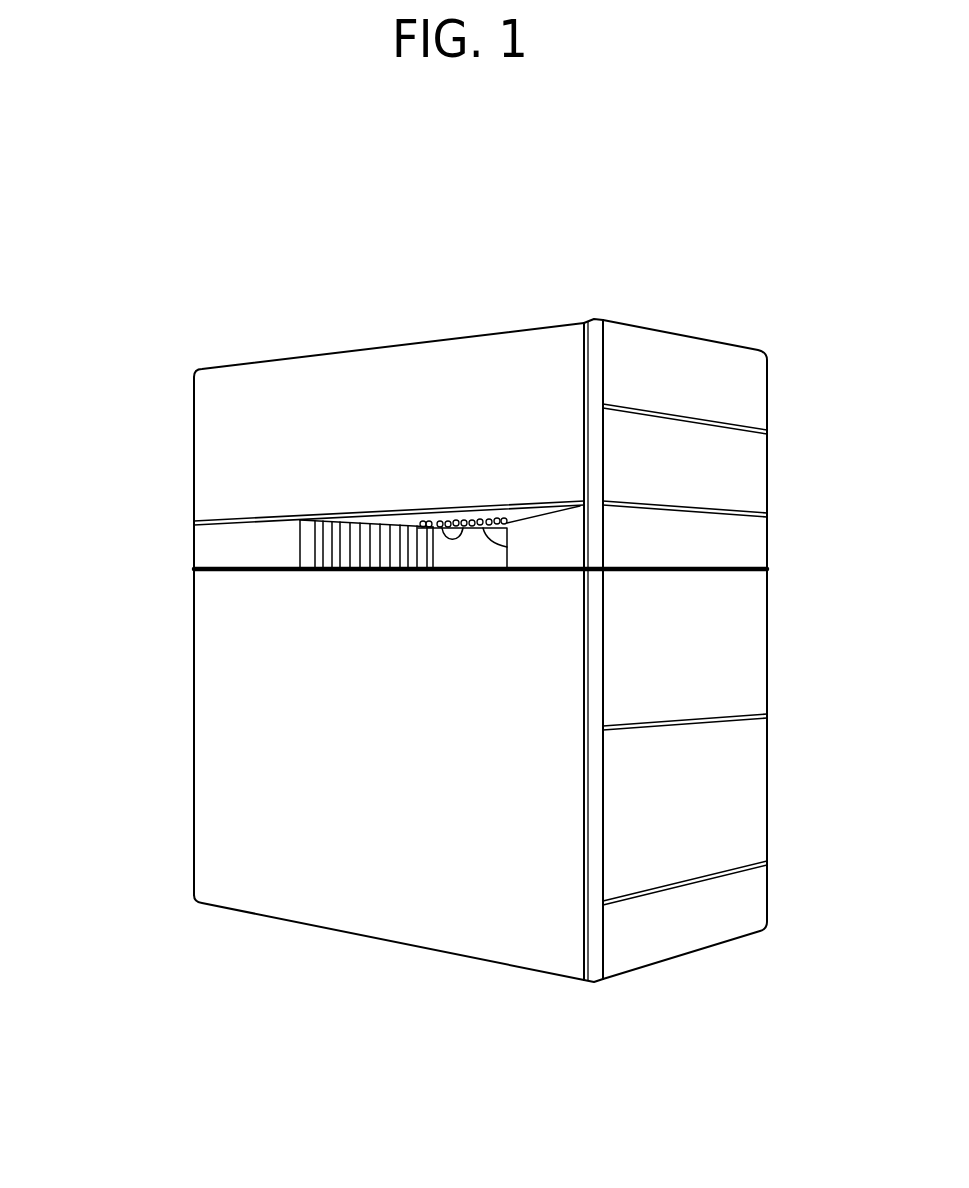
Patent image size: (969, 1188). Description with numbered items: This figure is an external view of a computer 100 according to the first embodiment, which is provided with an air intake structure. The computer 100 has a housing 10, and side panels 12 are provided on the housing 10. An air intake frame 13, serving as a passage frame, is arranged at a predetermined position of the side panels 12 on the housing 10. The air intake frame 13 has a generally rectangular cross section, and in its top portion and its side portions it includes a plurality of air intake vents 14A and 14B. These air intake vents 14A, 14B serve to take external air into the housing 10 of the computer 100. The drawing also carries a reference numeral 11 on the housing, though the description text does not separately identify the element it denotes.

The computer 100 is at (557, 162).
The housing 10 is at (241, 366).
The side wall 11 is at (752, 637).
The side panels 12 is at (328, 894).
The air intake frame 13 is at (478, 520).
The air intake vents 14A is at (347, 547).
The air intake vents 14B is at (437, 520).